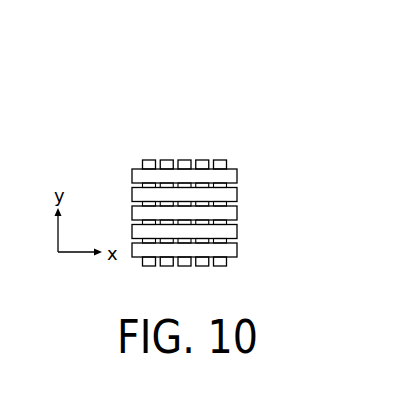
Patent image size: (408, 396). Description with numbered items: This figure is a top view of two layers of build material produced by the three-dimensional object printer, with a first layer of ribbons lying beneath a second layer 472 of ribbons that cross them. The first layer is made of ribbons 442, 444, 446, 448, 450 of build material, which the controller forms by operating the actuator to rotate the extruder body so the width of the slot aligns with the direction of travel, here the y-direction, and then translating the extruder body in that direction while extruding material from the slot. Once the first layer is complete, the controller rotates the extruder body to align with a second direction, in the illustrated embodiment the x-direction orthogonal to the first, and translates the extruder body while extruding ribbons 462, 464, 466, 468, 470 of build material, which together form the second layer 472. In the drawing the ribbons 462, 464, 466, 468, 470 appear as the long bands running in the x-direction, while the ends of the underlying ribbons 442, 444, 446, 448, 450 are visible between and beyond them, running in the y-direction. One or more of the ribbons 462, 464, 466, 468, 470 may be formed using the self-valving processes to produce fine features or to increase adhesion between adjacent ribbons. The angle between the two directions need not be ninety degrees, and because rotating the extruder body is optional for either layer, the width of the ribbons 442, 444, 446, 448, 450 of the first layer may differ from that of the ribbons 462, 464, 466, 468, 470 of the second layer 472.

The ribbon of build material 442 is at (184, 267).
The ribbon of build material 444 is at (165, 160).
The ribbon of build material 446 is at (204, 160).
The ribbon of build material 448 is at (147, 267).
The ribbon of build material 450 is at (222, 267).
The ribbon of build material 462 is at (237, 214).
The ribbon of build material 464 is at (237, 195).
The ribbon of build material 466 is at (237, 232).
The ribbon of build material 468 is at (237, 177).
The ribbon of build material 470 is at (237, 250).
The second layer 472 is at (107, 167).